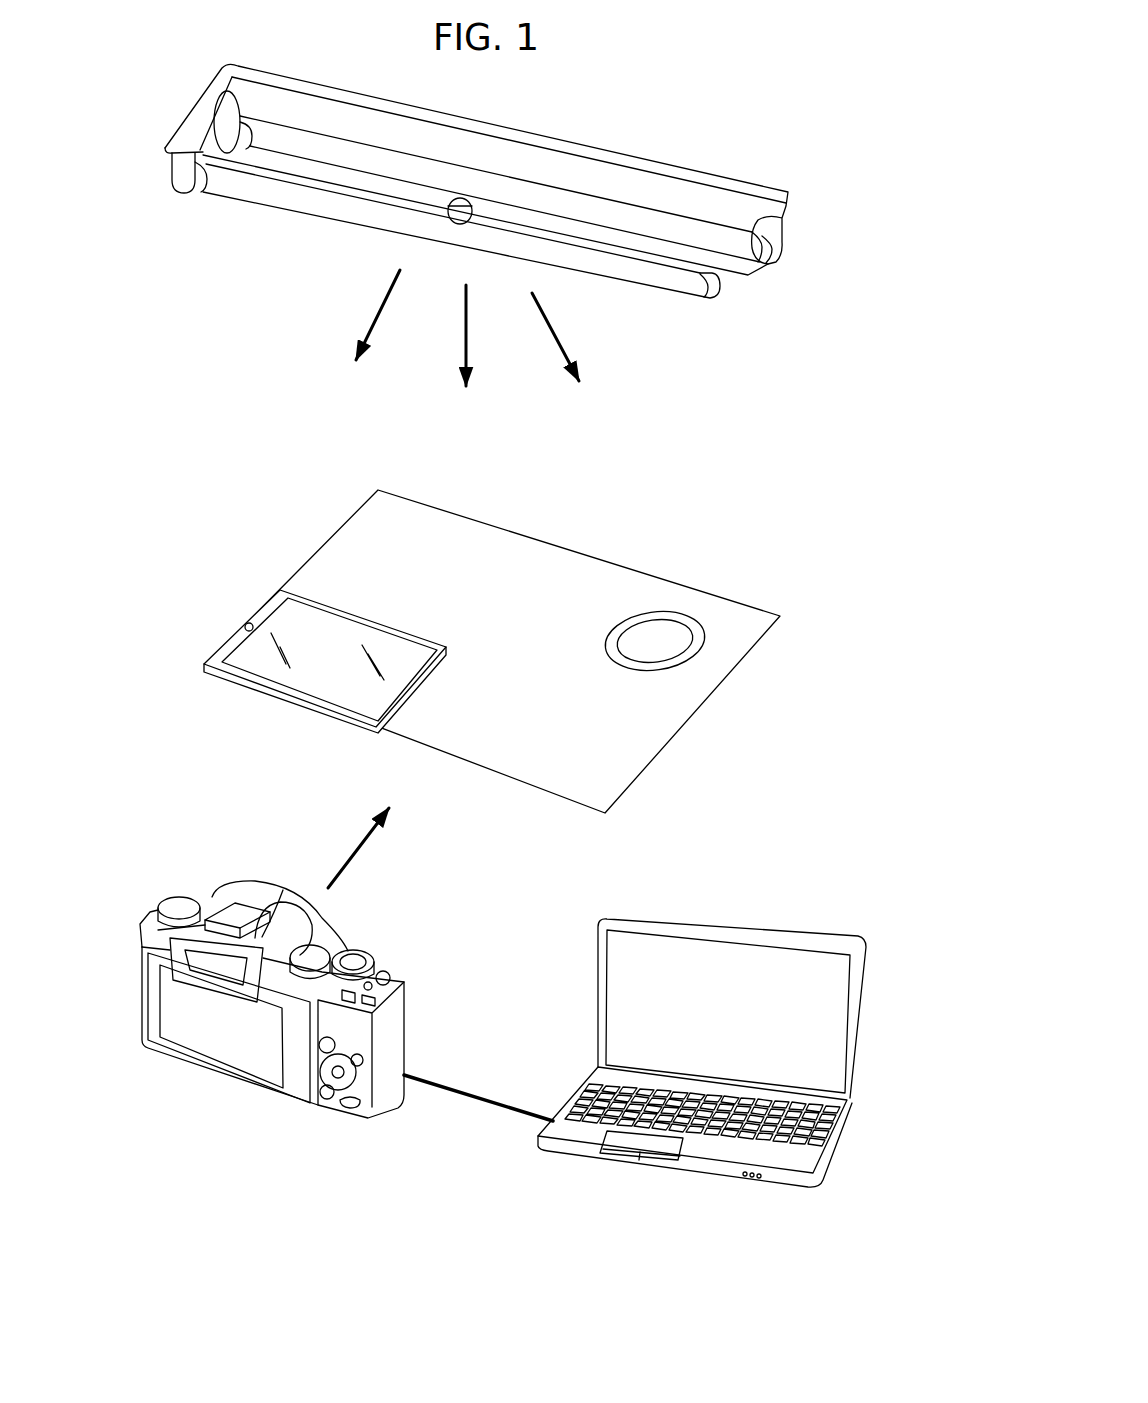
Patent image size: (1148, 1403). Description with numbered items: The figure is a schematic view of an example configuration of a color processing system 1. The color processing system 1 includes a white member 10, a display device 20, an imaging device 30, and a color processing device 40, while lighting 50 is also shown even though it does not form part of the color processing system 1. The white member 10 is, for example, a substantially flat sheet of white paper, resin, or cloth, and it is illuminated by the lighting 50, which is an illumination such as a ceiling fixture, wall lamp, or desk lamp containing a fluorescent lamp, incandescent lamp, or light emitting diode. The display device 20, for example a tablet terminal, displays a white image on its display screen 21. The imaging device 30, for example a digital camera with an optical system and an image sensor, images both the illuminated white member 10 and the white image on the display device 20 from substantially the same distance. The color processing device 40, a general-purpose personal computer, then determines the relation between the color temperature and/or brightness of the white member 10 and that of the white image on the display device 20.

The color processing system 1 is at (698, 480).
The white member 10 is at (650, 764).
The display device 20 is at (214, 643).
The display screen 21 is at (300, 629).
The imaging device 30 is at (218, 1073).
The color processing device 40 is at (697, 1175).
The lighting 50 is at (735, 186).